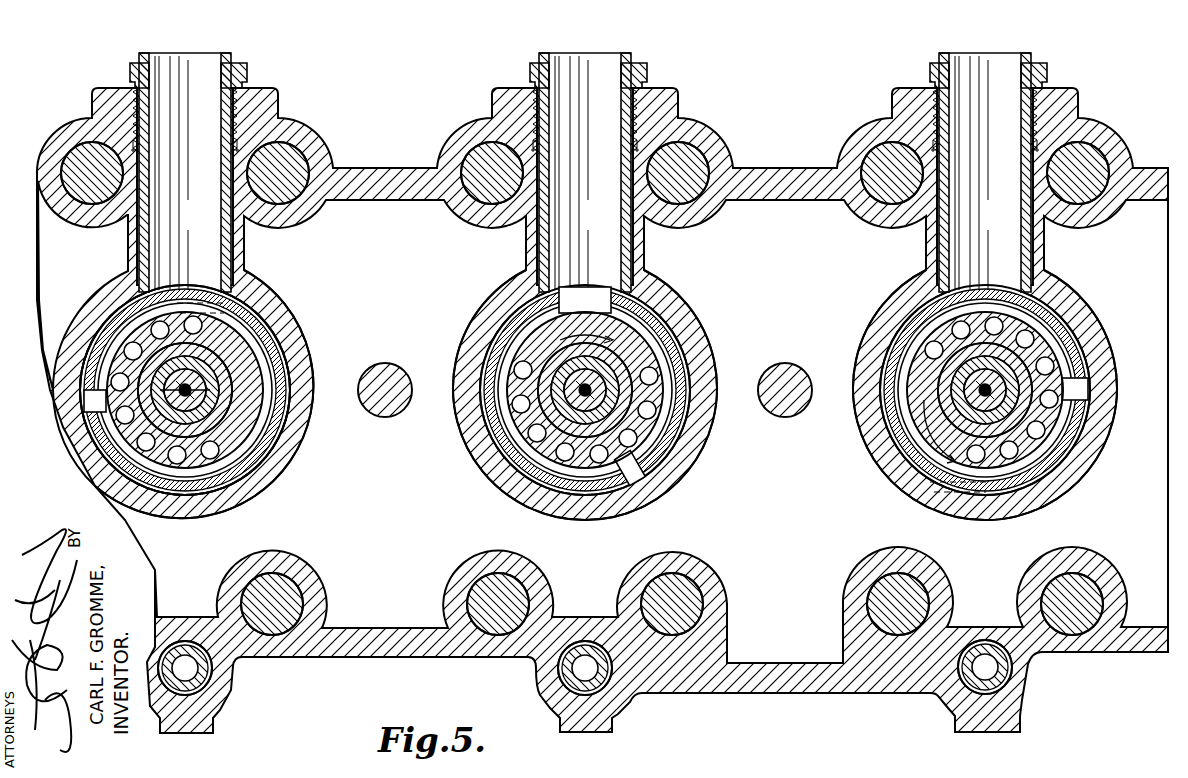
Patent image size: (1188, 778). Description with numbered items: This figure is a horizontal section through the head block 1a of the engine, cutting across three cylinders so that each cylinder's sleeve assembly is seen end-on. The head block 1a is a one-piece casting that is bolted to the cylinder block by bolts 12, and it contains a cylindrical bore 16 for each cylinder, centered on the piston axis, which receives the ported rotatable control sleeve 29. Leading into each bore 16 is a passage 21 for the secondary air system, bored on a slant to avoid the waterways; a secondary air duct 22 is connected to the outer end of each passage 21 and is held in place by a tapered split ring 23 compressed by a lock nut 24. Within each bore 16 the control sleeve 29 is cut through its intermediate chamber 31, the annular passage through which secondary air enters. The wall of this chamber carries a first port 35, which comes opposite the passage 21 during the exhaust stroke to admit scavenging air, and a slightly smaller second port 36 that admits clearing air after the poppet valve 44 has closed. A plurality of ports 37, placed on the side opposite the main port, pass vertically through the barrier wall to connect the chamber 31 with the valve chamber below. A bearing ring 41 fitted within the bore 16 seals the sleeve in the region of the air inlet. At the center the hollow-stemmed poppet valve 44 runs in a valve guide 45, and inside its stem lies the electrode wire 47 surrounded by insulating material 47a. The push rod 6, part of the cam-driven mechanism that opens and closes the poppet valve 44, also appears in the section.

The head block 1a is at (812, 696).
The push rod 6 is at (205, 678).
The bolts 12 is at (78, 222).
The cylindrical bore 16 is at (288, 460).
The passage 21 is at (1003, 206).
The secondary air duct 22 is at (146, 53).
The tapered split ring 23 is at (236, 142).
The lock nut 24 is at (247, 65).
The control sleeve 29 is at (228, 415).
The intermediate chamber 31 is at (258, 404).
The first port 35 is at (254, 320).
The second port 36 is at (90, 408).
The ports 37 is at (202, 327).
The bearing ring 41 is at (290, 378).
The poppet valve 44 is at (215, 360).
The valve guide 45 is at (220, 380).
The electrode wire 47 is at (192, 392).
The insulating material 47a is at (178, 393).